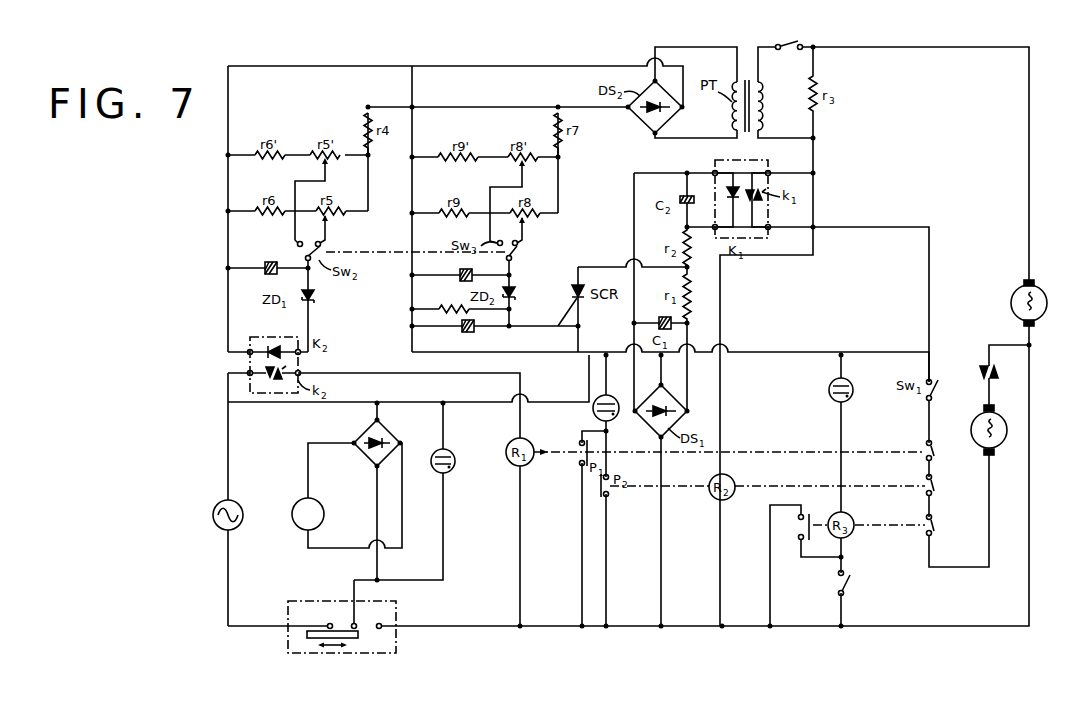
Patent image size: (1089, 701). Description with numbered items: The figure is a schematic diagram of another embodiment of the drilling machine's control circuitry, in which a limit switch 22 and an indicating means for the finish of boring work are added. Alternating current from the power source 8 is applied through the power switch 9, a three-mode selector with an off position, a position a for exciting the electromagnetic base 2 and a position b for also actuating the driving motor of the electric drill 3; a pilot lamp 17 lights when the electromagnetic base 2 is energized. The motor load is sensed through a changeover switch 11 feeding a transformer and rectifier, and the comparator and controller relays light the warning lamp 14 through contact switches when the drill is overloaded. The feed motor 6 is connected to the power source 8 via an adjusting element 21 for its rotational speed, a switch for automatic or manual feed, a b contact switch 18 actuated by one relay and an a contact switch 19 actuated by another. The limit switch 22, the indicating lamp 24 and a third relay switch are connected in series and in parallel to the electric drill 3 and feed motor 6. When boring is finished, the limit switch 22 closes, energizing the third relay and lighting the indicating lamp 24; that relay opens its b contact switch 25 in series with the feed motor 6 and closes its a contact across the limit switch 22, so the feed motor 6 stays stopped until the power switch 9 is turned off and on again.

The electromagnetic base 2 is at (292, 512).
The electric drill 3 is at (1047, 303).
The feed motor 6 is at (1000, 446).
The power source 8 is at (238, 528).
The power switch 9 is at (340, 653).
The changeover switch 11 is at (795, 42).
The warning lamp 14 is at (614, 416).
The pilot lamp 17 is at (451, 459).
The b contact switch 18 is at (919, 457).
The a contact switch 19 is at (919, 495).
The adjusting element 21 is at (980, 368).
The limit switch 22 is at (838, 587).
The indicating lamp 24 is at (829, 391).
The b contact switch of relay R3 25 is at (879, 540).